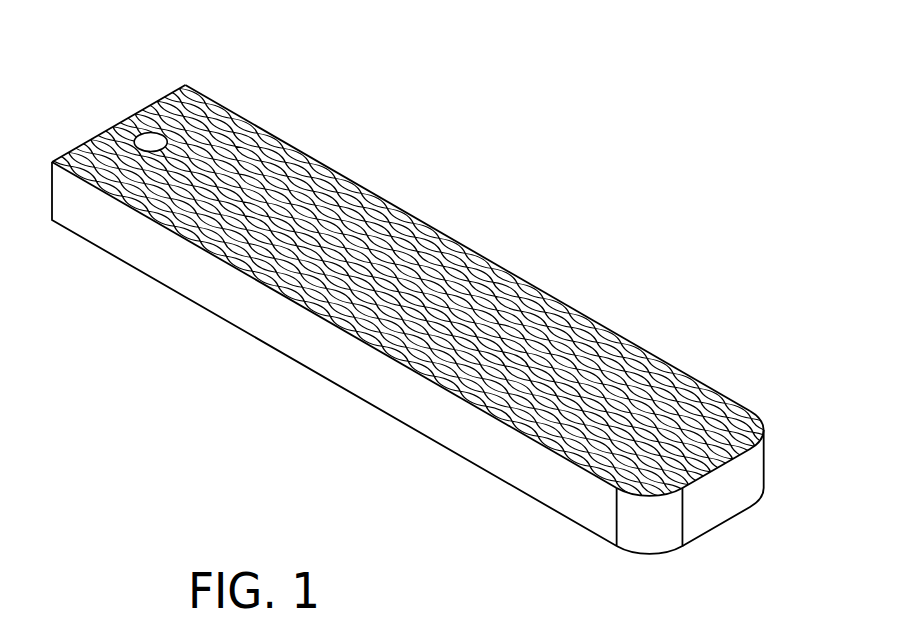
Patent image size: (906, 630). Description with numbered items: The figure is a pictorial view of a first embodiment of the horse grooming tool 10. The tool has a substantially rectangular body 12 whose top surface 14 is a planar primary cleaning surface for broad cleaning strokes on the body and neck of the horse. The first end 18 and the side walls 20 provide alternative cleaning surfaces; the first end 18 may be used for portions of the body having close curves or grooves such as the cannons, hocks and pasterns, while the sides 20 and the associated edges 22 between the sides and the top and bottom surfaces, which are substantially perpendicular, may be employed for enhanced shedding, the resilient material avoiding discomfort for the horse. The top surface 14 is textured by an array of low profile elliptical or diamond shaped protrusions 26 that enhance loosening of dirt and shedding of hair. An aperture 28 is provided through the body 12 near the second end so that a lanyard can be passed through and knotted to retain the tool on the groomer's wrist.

The horse grooming tool 10 is at (448, 200).
The body 12 is at (467, 248).
The top surface 14 is at (437, 308).
The first end 18 is at (723, 488).
The side walls 20 is at (367, 354).
The edges 22 is at (437, 307).
The protrusions 26 is at (334, 325).
The aperture 28 is at (150, 142).